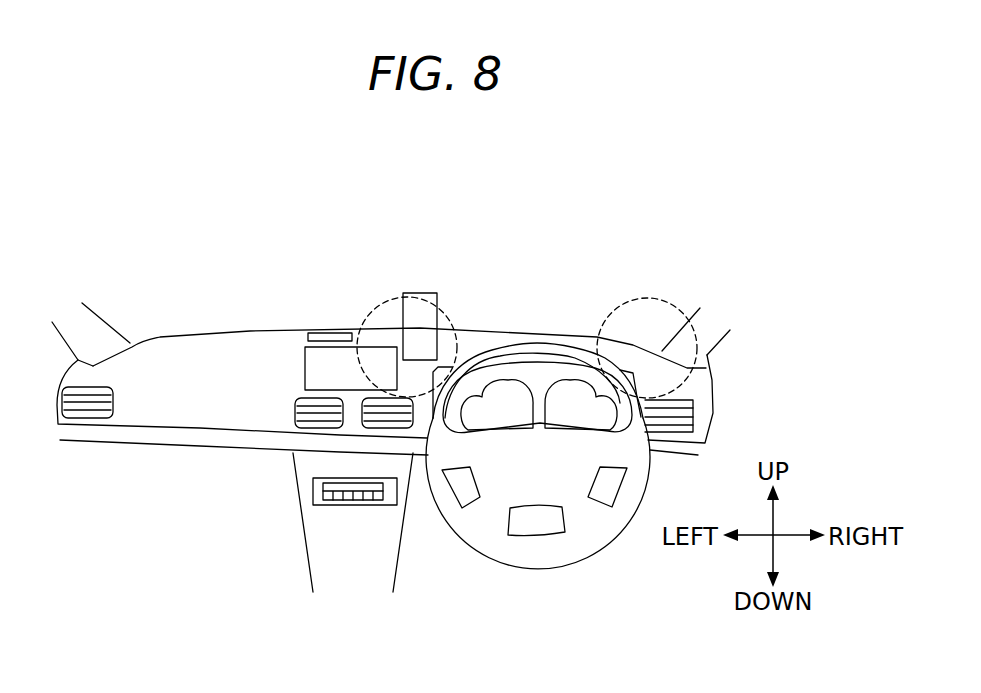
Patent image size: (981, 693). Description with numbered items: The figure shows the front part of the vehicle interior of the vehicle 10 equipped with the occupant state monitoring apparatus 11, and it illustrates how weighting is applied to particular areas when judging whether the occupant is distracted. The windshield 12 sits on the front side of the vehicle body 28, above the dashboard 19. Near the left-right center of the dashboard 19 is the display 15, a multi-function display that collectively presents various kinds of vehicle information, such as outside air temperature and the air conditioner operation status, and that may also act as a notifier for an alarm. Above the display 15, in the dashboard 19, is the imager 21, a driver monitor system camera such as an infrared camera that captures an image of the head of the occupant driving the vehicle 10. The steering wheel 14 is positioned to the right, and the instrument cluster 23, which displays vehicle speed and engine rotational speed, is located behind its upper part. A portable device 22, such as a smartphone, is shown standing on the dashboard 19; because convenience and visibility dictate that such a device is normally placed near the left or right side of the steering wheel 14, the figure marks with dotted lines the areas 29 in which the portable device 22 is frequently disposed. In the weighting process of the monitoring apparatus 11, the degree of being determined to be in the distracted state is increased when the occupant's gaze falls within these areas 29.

The vehicle 10 is at (510, 208).
The occupant state monitoring apparatus 11 is at (258, 258).
The windshield 12 is at (197, 283).
The steering wheel 14 is at (537, 570).
The display 15 is at (378, 347).
The dashboard 19 is at (600, 337).
The imager 21 is at (320, 333).
The portable device 22 is at (418, 293).
The instrument cluster 23 is at (507, 380).
The vehicle body 28 is at (363, 218).
The areas 29 is at (451, 318).